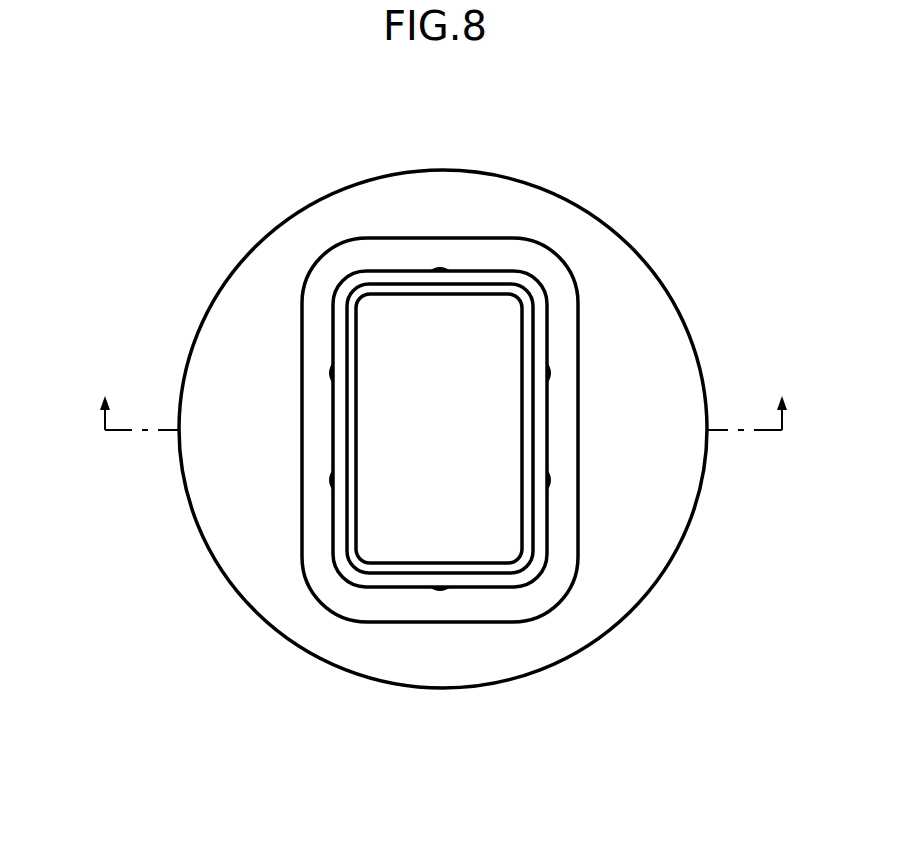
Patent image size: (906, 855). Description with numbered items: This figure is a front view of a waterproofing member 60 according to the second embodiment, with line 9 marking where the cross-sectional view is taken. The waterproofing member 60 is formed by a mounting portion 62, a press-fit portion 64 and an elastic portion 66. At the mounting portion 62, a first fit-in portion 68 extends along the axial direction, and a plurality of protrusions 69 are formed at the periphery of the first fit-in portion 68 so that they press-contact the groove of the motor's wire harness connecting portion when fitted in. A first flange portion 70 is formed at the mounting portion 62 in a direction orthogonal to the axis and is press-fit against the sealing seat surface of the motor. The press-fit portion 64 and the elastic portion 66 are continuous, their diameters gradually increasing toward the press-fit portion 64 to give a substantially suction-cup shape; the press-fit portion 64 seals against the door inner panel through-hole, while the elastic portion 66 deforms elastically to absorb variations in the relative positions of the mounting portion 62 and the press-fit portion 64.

The waterproofing member 60 is at (750, 166).
The mounting portion 62 is at (552, 313).
The press-fit portion 64 is at (670, 317).
The elastic portion 66 is at (600, 338).
The first fit-in portion 68 is at (480, 277).
The protrusions 69 is at (438, 268).
The first flange portion 70 is at (565, 417).
The line 9- 9 is at (445, 393).